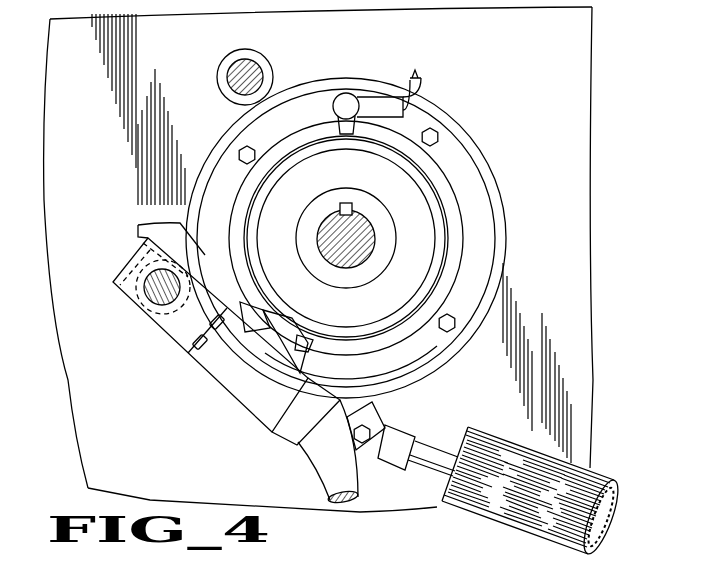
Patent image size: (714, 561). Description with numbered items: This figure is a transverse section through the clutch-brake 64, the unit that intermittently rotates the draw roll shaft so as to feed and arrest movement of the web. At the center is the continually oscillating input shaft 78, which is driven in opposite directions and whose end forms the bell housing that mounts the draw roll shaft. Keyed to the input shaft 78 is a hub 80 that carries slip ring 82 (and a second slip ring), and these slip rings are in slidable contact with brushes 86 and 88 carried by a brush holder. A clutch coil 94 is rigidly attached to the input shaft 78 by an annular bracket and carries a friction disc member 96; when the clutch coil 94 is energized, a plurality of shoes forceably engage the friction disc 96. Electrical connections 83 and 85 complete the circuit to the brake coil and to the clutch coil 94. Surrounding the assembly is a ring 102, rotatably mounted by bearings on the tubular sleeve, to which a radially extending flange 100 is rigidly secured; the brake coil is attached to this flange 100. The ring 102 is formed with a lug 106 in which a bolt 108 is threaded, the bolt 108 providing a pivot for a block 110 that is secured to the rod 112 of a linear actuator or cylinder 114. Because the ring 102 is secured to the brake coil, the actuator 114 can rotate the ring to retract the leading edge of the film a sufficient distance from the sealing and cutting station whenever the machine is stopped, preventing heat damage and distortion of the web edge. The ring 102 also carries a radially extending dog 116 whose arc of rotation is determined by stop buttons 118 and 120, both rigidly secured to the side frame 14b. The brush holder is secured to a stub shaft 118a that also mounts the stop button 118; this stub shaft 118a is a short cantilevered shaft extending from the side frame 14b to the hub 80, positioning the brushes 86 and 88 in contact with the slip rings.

The side frame 14b is at (585, 91).
The clutch-brake 64 is at (462, 60).
The input shaft 78 is at (362, 216).
The hub 80 is at (364, 313).
The slip ring 82 is at (408, 332).
The electrical connection 83 is at (376, 97).
The electrical connection 85 is at (334, 109).
The brush 86 is at (256, 296).
The brush 88 is at (308, 332).
The clutch coil 94 is at (445, 182).
The friction disc member 96 is at (231, 391).
The radially extending flange 100 is at (457, 153).
The ring 102 is at (458, 131).
The lug 106 is at (385, 407).
The bolt 108 is at (380, 411).
The block 110 is at (386, 446).
The rod 112 is at (424, 471).
The linear actuator 114 is at (505, 523).
The dog 116 is at (147, 233).
The stop button 118 is at (155, 322).
The stub shaft 118a is at (150, 298).
The stop button 120 is at (231, 54).